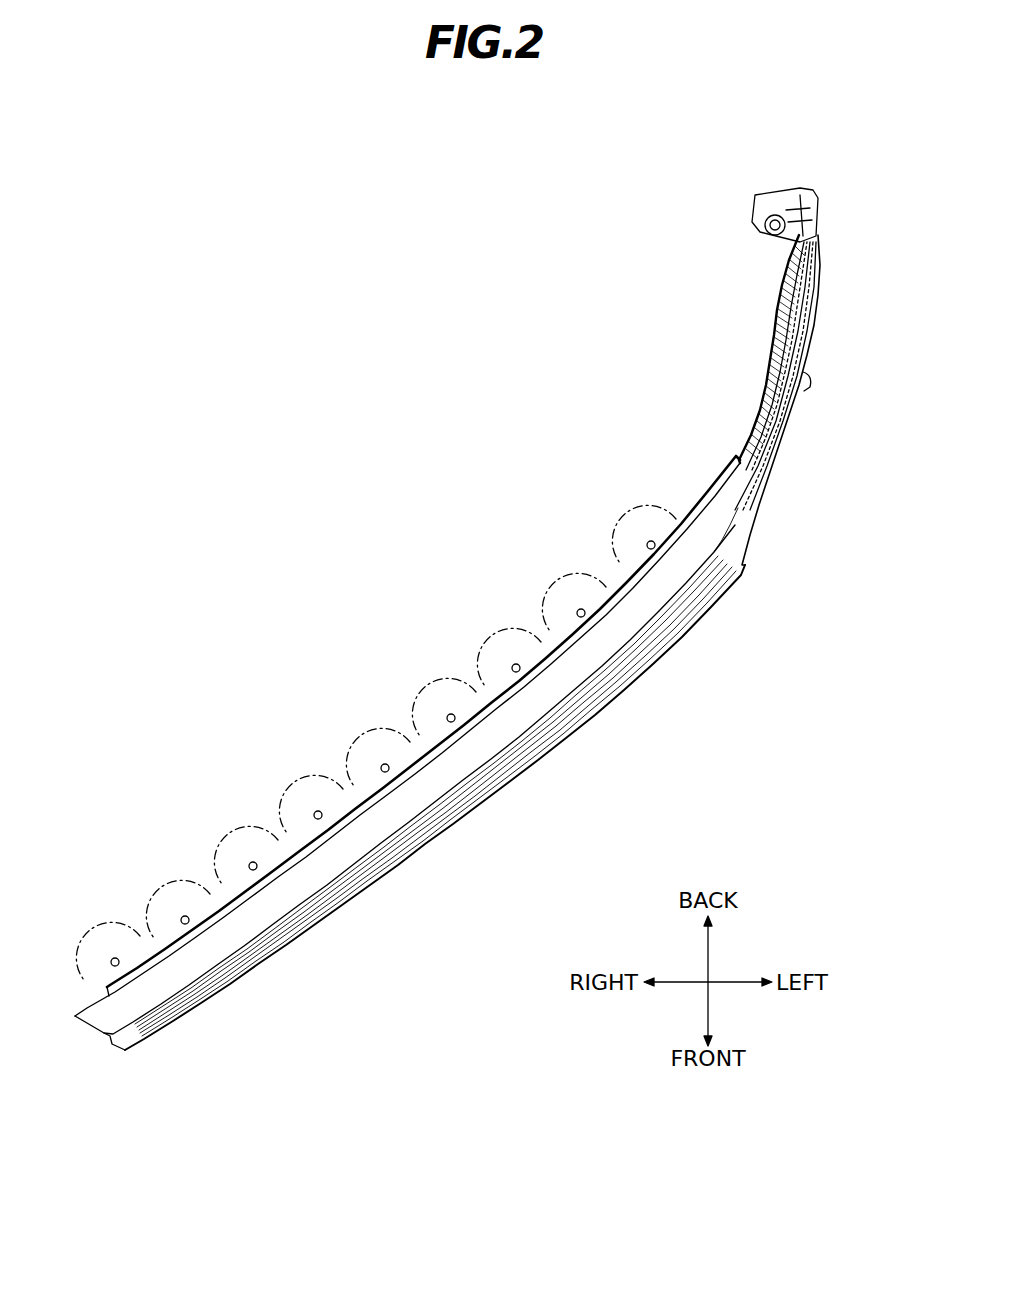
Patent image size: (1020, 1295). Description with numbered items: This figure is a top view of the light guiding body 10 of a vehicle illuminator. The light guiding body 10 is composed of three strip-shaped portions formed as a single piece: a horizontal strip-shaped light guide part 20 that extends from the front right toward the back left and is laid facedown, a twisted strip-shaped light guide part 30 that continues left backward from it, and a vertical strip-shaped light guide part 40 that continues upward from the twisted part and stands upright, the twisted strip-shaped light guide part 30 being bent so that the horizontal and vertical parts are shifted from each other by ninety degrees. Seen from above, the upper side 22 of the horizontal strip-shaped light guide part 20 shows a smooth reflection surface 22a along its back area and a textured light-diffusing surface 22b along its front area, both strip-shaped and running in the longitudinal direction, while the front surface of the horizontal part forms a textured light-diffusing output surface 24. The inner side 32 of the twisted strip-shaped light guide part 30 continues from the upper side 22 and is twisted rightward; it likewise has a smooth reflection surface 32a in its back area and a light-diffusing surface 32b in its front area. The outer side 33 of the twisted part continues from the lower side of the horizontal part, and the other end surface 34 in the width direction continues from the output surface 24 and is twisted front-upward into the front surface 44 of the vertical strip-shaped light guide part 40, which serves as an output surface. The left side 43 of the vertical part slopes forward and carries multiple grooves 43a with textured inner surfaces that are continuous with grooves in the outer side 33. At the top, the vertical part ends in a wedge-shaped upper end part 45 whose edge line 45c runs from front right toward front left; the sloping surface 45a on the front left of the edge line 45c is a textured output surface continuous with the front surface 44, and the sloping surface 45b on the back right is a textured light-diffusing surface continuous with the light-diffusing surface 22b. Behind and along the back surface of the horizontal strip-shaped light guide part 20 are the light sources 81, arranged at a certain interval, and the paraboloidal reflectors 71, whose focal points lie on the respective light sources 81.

The light guiding body 10 is at (312, 240).
The horizontal strip-shaped light guide part 20 is at (410, 781).
The upper side 22 is at (420, 815).
The reflection surface 22a is at (160, 985).
The light-diffusing surface 22b is at (237, 970).
The output surface 24 is at (405, 855).
The twisted strip-shaped light guide part 30 is at (745, 409).
The inner side 32 is at (673, 495).
The reflection surface 32a is at (733, 500).
The light-diffusing surface 32b is at (723, 538).
The outer side 33 is at (750, 525).
The other end surface in the width direction 34 is at (728, 560).
The vertical strip-shaped light guide part 40 is at (772, 376).
The left side 43 is at (808, 382).
The grooves 43a is at (782, 437).
The front surface 44 is at (762, 471).
The upper end part 45 is at (772, 329).
The sloping surface 45a is at (775, 327).
The sloping surface 45b is at (772, 337).
The edge line 45c is at (817, 253).
The reflectors 71 is at (92, 947).
The light sources 81 is at (181, 917).